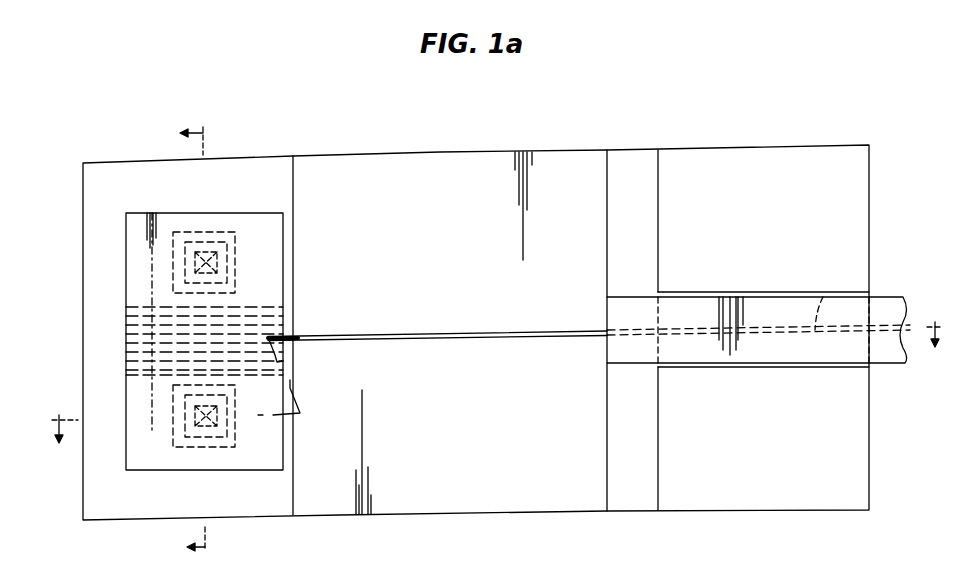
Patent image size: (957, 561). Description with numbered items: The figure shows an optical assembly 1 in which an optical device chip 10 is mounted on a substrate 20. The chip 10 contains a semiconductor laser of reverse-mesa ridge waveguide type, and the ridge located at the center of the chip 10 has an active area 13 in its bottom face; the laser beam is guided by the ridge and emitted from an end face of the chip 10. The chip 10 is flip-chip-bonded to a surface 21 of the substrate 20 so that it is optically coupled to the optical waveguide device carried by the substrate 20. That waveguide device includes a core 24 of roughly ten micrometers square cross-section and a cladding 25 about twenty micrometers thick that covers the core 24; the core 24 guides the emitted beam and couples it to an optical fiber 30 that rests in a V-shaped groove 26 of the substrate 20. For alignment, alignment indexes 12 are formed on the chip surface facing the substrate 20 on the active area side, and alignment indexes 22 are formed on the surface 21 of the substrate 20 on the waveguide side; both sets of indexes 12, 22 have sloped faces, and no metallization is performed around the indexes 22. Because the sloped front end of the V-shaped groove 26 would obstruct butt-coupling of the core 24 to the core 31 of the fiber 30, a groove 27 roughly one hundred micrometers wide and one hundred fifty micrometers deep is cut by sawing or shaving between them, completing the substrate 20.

The optical assembly 1 is at (483, 127).
The optical device chip 10 is at (155, 217).
The alignment indexes 12 is at (233, 247).
The active area 13 is at (233, 303).
The substrate 20 is at (257, 157).
The surface 21 is at (265, 196).
The alignment indexes 22 is at (230, 262).
The core 24 is at (447, 333).
The cladding 25 is at (460, 206).
The V-shaped groove 26 is at (718, 297).
The groove 27 is at (625, 165).
The optical fiber 30 is at (780, 297).
The core 31 is at (823, 297).